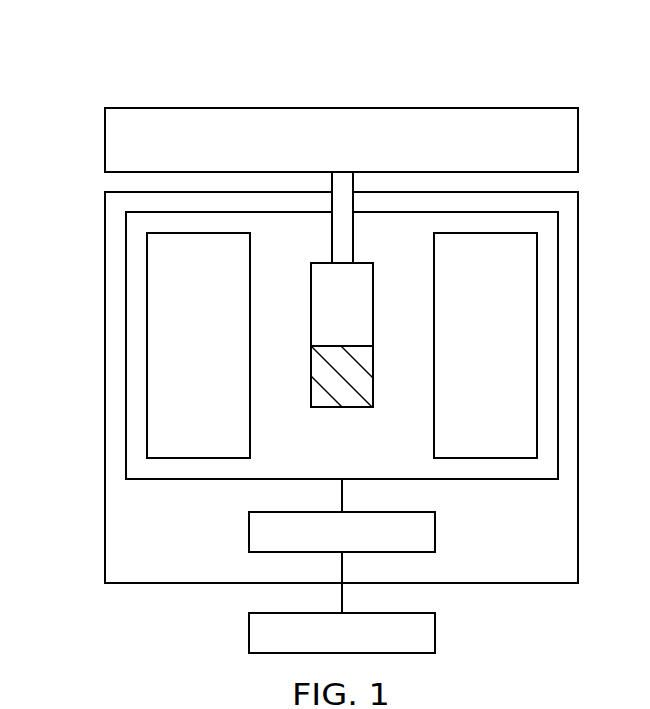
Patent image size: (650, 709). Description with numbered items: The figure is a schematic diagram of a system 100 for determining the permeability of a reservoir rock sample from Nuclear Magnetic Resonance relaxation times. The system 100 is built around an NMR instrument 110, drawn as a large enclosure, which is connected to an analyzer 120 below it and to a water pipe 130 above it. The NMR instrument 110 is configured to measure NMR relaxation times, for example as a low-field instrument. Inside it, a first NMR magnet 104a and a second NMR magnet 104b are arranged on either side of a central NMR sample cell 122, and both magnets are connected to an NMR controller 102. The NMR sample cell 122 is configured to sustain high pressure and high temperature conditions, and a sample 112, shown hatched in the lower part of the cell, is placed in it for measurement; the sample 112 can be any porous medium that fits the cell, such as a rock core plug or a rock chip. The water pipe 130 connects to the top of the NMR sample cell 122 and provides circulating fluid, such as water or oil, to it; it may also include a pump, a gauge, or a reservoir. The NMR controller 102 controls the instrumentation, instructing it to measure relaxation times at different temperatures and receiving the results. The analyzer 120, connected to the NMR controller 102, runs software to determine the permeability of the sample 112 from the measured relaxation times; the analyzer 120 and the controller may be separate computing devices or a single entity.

The system 100 is at (163, 66).
The NMR instrument 110 is at (100, 389).
The water pipe 130 is at (323, 152).
The NMR sample cell 122 is at (322, 320).
The sample 112 is at (350, 400).
The first NMR magnet 104a is at (224, 362).
The second NMR magnet 104b is at (513, 361).
The NMR controller 102 is at (249, 530).
The analyzer 120 is at (249, 632).